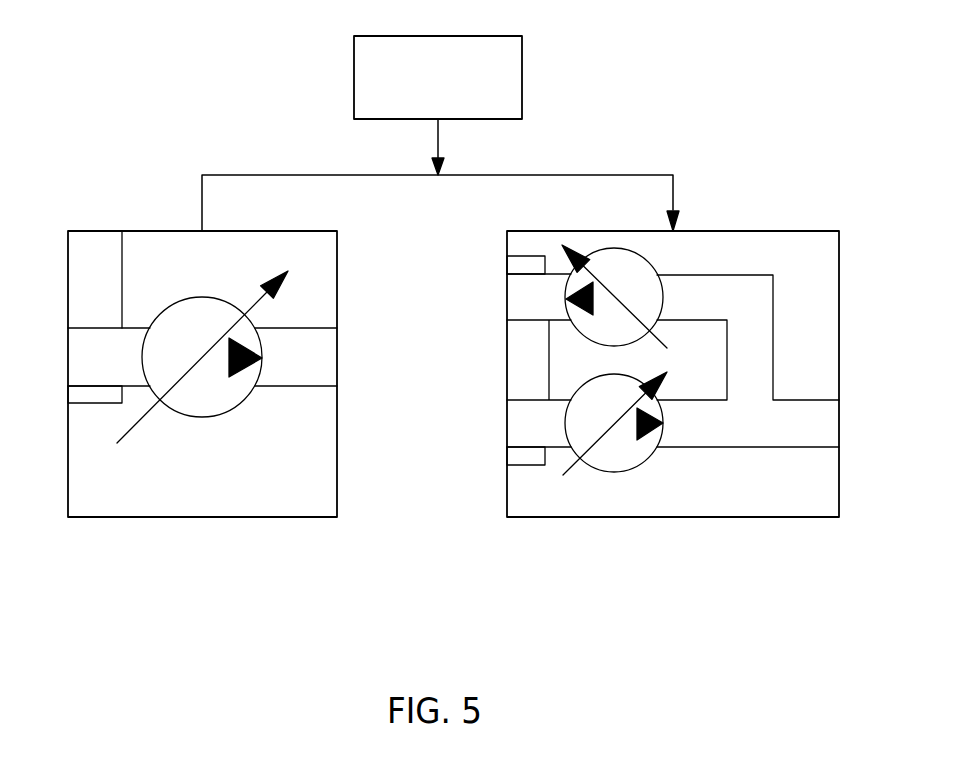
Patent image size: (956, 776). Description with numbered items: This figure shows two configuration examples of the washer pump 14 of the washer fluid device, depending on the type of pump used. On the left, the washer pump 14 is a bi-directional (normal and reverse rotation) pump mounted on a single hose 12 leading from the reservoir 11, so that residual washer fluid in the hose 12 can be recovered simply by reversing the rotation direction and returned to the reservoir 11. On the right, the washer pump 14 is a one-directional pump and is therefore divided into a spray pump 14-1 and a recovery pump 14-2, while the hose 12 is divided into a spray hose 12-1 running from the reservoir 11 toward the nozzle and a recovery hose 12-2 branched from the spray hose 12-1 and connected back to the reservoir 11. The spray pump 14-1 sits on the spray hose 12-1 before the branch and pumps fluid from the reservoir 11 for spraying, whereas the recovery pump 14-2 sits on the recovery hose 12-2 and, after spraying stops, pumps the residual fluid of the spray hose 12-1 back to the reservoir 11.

The reservoir 11 is at (80, 405).
The hose 12 is at (300, 386).
The spray hose 12-1 is at (820, 400).
The recovery hose 12-2 is at (773, 362).
The washer pump 14 is at (522, 73).
The spray pump 14-1 is at (566, 430).
The recovery pump 14-2 is at (567, 305).